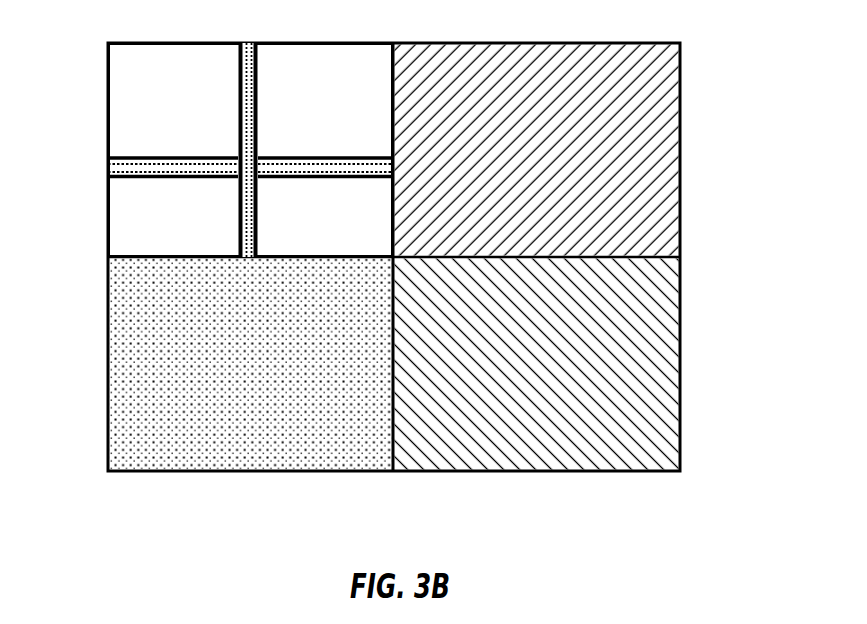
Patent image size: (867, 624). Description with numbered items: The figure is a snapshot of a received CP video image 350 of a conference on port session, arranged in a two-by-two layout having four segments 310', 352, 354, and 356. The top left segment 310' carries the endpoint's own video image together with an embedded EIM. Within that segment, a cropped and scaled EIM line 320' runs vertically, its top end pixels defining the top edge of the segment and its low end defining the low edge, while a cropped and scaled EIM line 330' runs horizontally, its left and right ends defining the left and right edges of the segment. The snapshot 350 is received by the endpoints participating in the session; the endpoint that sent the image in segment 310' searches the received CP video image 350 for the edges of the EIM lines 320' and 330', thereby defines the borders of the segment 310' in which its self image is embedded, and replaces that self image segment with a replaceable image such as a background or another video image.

The top left segment 310' is at (251, 131).
The cropped and scaled EIM line 320' is at (286, 131).
The cropped and scaled EIM line 330' is at (211, 155).
The received CP video image 350 is at (678, 257).
The segment 352 is at (548, 80).
The segment 354 is at (563, 428).
The segment 356 is at (297, 428).